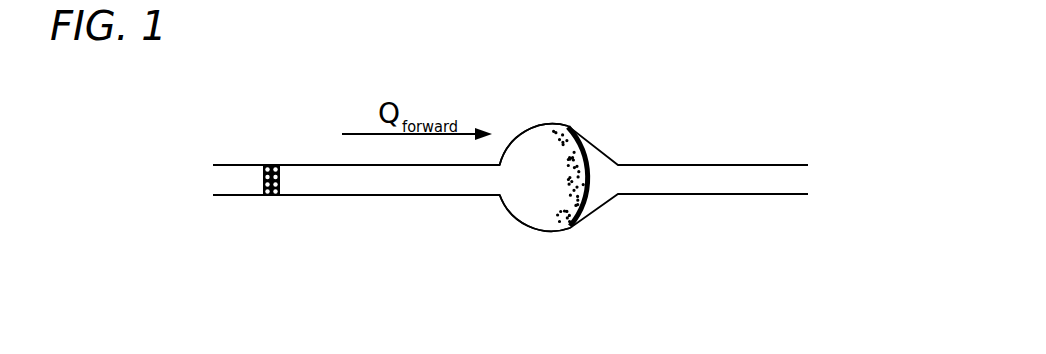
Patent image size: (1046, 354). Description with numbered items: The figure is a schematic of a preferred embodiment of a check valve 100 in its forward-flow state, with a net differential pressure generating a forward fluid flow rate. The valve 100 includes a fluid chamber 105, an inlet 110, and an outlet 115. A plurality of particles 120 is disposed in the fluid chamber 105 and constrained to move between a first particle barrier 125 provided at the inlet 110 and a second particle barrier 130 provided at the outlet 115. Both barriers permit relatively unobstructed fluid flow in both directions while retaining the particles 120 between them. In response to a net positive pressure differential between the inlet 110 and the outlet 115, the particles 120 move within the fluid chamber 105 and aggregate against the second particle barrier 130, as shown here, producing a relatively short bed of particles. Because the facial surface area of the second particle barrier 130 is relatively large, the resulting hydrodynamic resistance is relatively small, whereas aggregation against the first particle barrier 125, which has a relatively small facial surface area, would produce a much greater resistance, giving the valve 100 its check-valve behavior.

The check valve 100 is at (700, 55).
The fluid chamber 105 is at (496, 233).
The inlet 110 is at (238, 178).
The outlet 115 is at (723, 172).
The particles 120 is at (562, 130).
The first particle barrier 125 is at (277, 198).
The second particle barrier 130 is at (587, 185).